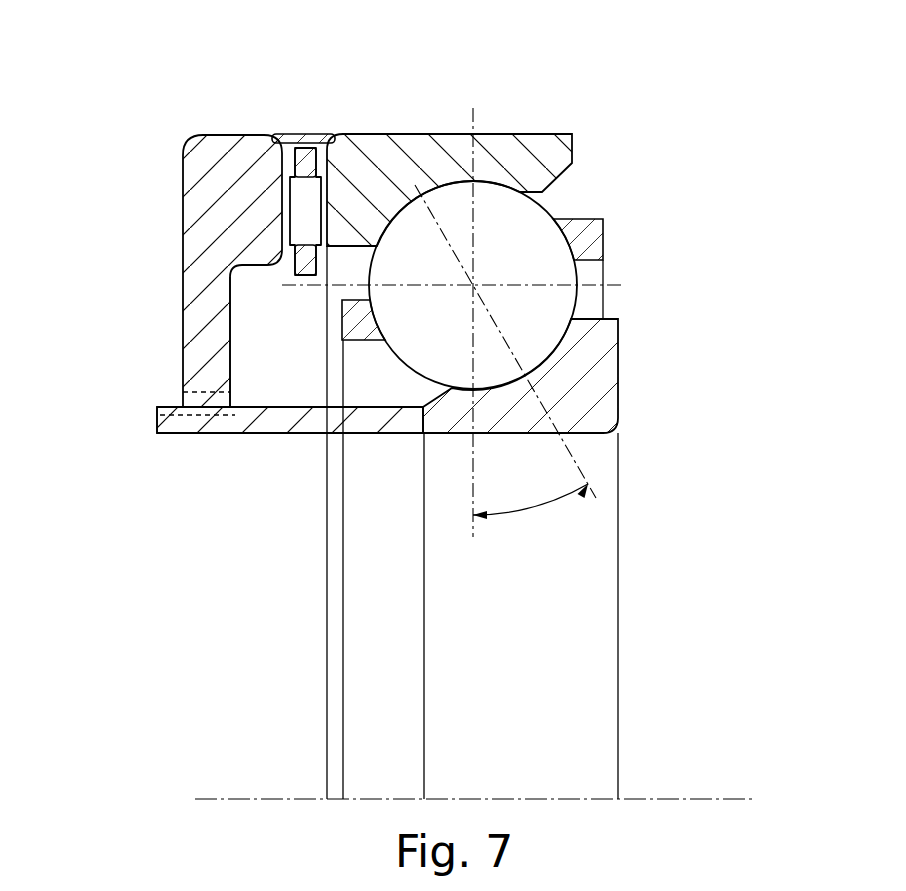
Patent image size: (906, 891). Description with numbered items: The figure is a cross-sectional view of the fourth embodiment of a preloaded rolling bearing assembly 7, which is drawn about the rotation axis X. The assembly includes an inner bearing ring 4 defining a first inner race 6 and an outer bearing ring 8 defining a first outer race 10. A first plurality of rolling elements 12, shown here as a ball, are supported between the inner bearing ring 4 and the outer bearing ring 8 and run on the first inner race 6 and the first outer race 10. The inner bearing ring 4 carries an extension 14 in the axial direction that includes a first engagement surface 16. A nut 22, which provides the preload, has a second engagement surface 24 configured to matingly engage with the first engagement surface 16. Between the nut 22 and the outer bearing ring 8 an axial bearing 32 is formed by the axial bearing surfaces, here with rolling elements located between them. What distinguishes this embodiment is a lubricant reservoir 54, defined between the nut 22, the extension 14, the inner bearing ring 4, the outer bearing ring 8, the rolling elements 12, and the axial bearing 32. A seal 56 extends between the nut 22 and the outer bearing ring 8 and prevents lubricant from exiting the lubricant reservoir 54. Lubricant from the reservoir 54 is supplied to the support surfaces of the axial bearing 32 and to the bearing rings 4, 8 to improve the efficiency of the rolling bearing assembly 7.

The inner bearing ring 4 is at (593, 392).
The first inner race 6 is at (553, 355).
The rolling bearing assembly 7 is at (556, 128).
The outer bearing ring 8 is at (401, 135).
The first outer race 10 is at (487, 186).
The first plurality of rolling elements 12 is at (518, 232).
The extension 14 is at (290, 427).
The first engagement surface 16 is at (155, 407).
The nut 22 is at (205, 190).
The second engagement surface 24 is at (183, 392).
The axial bearing 32 is at (304, 146).
The lubricant reservoir 54 is at (233, 327).
The seal 56 is at (317, 136).
The rotation axis X is at (695, 799).